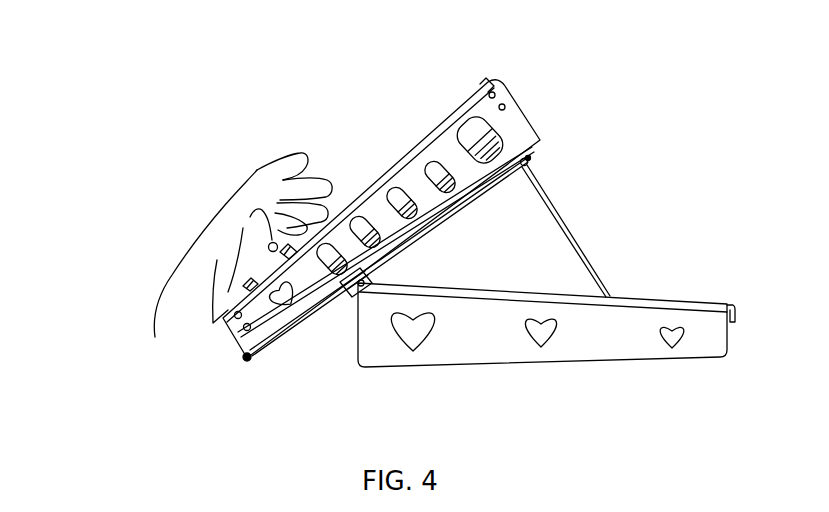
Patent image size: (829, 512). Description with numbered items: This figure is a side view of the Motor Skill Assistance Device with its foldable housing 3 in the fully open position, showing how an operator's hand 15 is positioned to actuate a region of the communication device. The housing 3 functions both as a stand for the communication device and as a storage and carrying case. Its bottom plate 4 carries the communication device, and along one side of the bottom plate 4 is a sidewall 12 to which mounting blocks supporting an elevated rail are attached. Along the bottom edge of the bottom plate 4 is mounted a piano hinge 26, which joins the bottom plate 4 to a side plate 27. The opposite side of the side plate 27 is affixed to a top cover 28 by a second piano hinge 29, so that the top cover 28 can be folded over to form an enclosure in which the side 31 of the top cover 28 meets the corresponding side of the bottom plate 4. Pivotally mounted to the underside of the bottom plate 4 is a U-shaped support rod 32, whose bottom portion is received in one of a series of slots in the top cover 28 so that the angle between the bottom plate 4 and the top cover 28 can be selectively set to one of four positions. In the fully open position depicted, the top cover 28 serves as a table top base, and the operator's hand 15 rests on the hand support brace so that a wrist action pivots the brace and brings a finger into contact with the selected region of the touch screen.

The foldable housing 3 is at (373, 206).
The bottom plate 4 is at (493, 80).
The sidewall 12 is at (445, 153).
The hand 15 is at (167, 273).
The piano hinge 26 is at (243, 358).
The side plate 27 is at (297, 333).
The top cover 28 is at (546, 325).
The second piano hinge 29 is at (366, 282).
The side of top cover 31 is at (495, 343).
The U-shaped support rod 32 is at (567, 222).